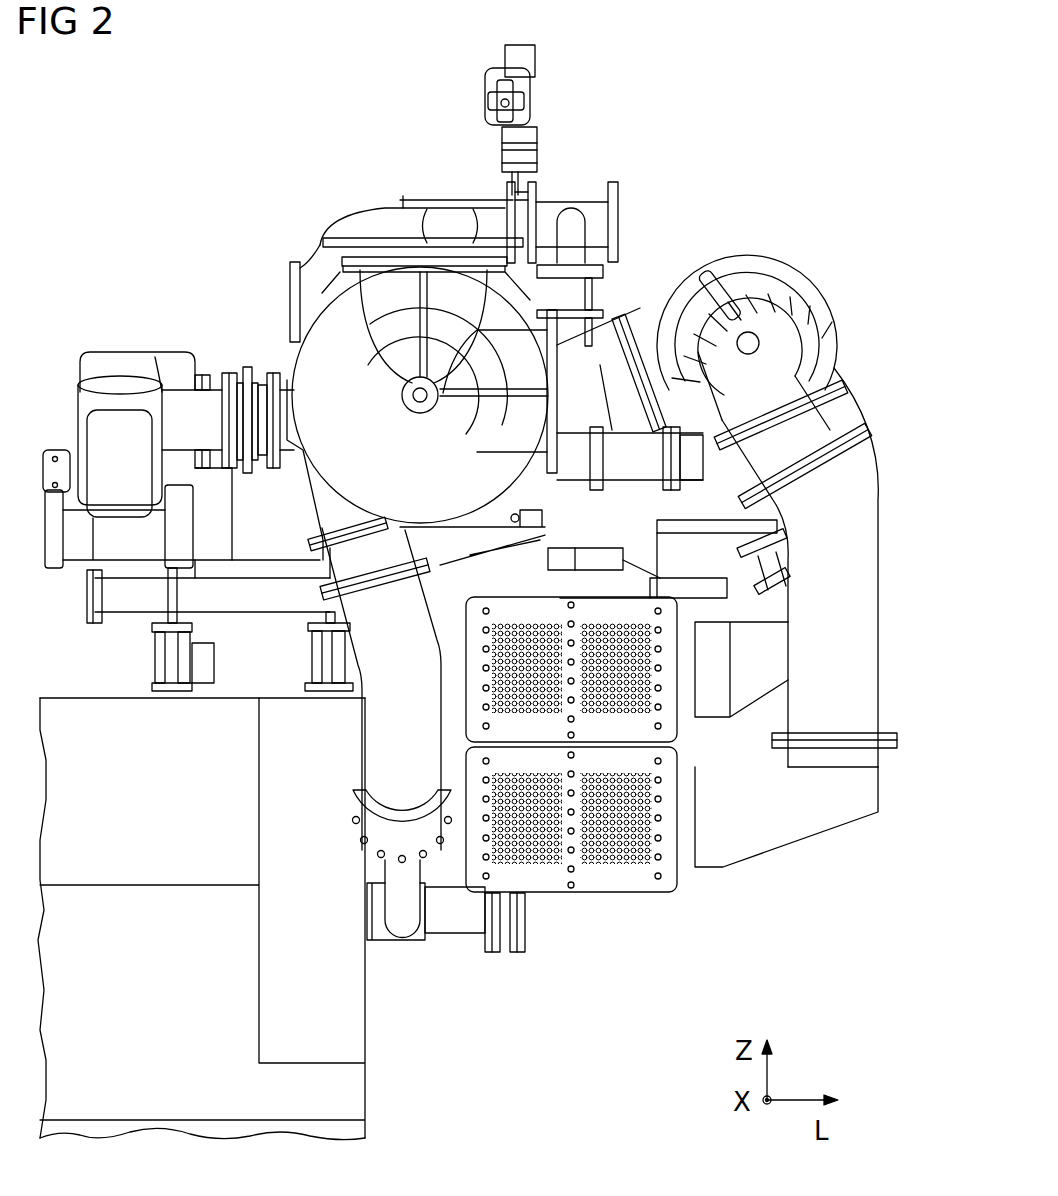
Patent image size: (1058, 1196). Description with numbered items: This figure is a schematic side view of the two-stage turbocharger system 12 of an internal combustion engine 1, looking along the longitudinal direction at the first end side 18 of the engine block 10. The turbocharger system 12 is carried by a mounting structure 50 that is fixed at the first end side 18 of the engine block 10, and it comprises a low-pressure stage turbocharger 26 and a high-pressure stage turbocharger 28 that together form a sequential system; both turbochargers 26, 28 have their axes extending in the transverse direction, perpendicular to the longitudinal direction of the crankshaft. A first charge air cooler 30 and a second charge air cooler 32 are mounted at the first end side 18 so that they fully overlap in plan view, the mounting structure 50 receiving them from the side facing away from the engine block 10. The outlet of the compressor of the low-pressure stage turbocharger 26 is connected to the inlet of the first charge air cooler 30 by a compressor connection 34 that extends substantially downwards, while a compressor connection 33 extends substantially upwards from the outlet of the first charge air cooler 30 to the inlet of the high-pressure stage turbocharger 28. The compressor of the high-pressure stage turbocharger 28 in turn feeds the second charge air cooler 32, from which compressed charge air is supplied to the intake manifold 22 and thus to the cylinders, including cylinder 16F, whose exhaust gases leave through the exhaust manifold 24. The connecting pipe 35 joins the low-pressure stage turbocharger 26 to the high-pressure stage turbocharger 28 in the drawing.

The internal combustion engine 1 is at (186, 120).
The engine block 10 is at (346, 1025).
The two-stage turbocharger system 12 is at (686, 200).
The cylinder 16F is at (70, 346).
The first end side 18 is at (418, 1100).
The intake manifold 22 is at (265, 588).
The exhaust manifold 24 is at (177, 402).
The low-pressure stage turbocharger 26 is at (300, 362).
The high-pressure stage turbocharger 28 is at (773, 276).
The first charge air cooler 30 is at (622, 882).
The second charge air cooler 32 is at (670, 724).
The compressor connection 33 is at (867, 576).
The compressor connection 34 is at (368, 760).
The connecting pipe 35 is at (570, 353).
The mounting structure 50 is at (602, 558).